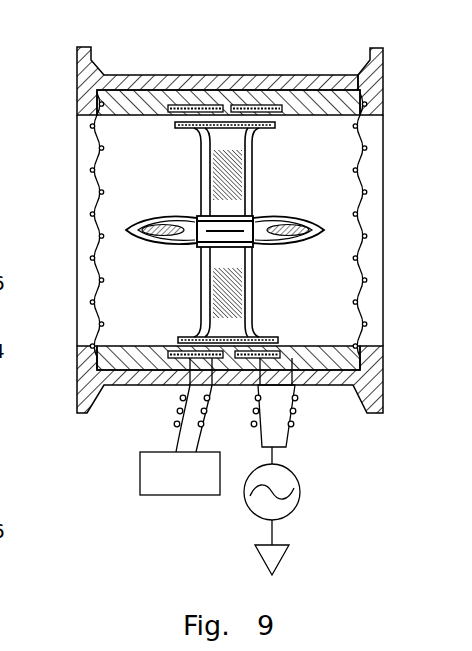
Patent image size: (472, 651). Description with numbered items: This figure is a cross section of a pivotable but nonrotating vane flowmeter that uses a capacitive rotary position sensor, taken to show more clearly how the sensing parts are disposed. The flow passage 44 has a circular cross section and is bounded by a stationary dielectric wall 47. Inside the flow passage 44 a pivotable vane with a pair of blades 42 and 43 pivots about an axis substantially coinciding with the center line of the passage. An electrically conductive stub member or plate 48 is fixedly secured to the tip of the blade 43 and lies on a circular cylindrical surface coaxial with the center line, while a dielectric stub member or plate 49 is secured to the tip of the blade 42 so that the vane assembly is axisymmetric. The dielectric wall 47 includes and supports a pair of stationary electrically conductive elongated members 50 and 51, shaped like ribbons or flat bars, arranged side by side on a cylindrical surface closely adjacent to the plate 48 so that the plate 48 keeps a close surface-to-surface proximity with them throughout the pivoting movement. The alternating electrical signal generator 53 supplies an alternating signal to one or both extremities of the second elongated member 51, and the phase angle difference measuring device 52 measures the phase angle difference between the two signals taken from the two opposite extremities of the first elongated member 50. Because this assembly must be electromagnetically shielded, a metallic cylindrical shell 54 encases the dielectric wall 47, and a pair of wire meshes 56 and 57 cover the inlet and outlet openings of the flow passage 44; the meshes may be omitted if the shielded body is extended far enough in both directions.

The blade 42 is at (240, 183).
The blade 43 is at (239, 288).
The flow passage 44 is at (138, 163).
The dielectric wall 47 is at (143, 101).
The electrically conductive stub member or plate 48 is at (262, 337).
The dielectric stub member or plate 49 is at (260, 138).
The first electrically conductive elongated member 50 is at (206, 101).
The second electrically conductive elongated member 51 is at (270, 110).
The phase angle difference measuring device 52 is at (180, 495).
The alternating electrical signal generator 53 is at (300, 487).
The metallic cylindrical shell 54 is at (330, 82).
The wire mesh 56 is at (92, 183).
The wire mesh 57 is at (367, 221).